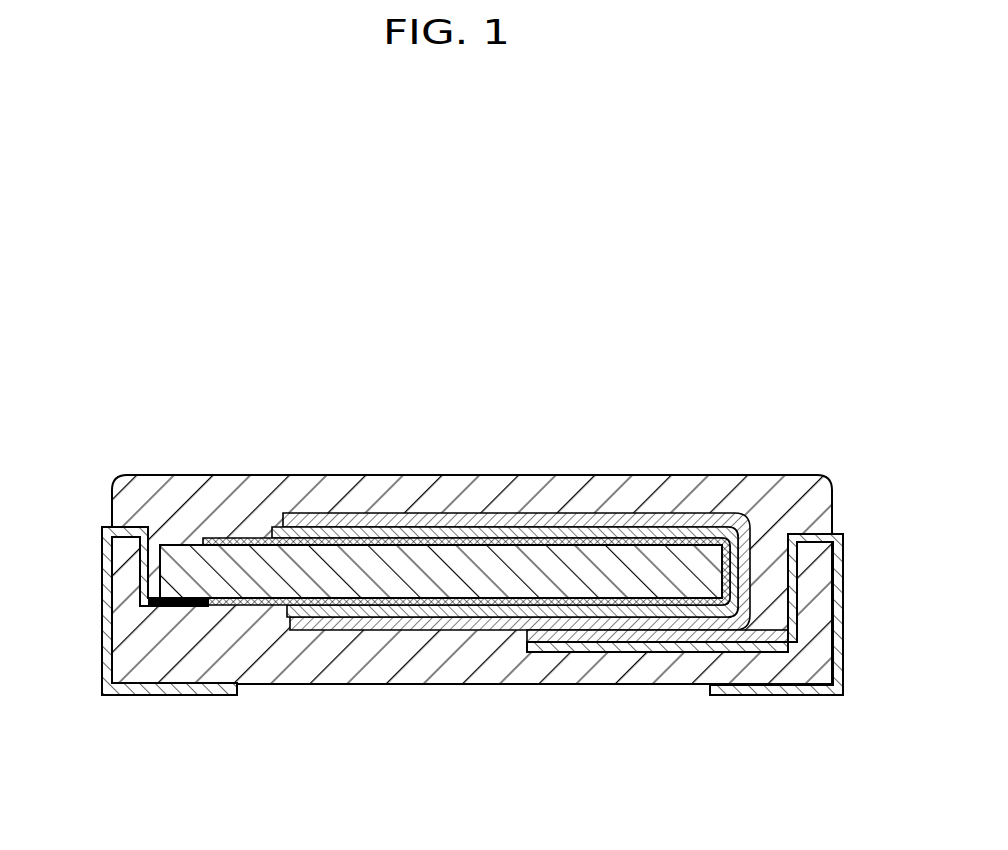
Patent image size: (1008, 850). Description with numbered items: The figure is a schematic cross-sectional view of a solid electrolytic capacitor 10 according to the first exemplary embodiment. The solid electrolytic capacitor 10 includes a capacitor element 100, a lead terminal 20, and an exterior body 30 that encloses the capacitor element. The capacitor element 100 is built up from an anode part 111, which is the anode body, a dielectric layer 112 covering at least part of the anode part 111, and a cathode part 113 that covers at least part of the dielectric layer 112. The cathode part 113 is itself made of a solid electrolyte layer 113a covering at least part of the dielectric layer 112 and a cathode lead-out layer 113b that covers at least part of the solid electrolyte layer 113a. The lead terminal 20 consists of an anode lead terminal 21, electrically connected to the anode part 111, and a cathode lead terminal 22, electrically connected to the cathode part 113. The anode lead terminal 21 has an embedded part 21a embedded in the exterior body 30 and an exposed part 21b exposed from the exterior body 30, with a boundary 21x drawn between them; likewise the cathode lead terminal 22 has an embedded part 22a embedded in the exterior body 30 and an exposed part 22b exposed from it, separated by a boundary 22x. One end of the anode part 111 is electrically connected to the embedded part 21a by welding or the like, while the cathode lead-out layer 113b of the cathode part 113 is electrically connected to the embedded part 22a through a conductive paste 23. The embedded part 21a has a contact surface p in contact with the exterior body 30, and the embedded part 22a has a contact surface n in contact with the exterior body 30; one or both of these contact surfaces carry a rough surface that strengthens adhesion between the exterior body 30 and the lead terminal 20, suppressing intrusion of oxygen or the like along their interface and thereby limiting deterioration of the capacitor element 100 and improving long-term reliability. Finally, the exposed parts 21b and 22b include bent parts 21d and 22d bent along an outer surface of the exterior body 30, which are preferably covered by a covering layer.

The solid electrolytic capacitor 10 is at (114, 289).
The capacitor element 100 is at (455, 470).
The anode part 111 is at (672, 358).
The dielectric layer 112 is at (523, 535).
The cathode part 113 is at (516, 497).
The solid electrolyte layer 113a is at (595, 530).
The cathode lead-out layer 113b is at (709, 515).
The exterior body 30 is at (232, 483).
The lead terminal 20 is at (461, 632).
The anode lead terminal 21 is at (132, 607).
The embedded part 21a is at (176, 606).
The exposed part 21b is at (123, 690).
The boundary 21x is at (109, 522).
The bent part 21d is at (96, 696).
The cathode lead terminal 22 is at (711, 610).
The embedded part 22a is at (615, 654).
The exposed part 22b is at (712, 689).
The boundary 22x is at (839, 530).
The bent part 22d is at (846, 699).
The conductive paste 23 is at (690, 633).
The contact surface p is at (130, 523).
The contact surface n is at (808, 530).